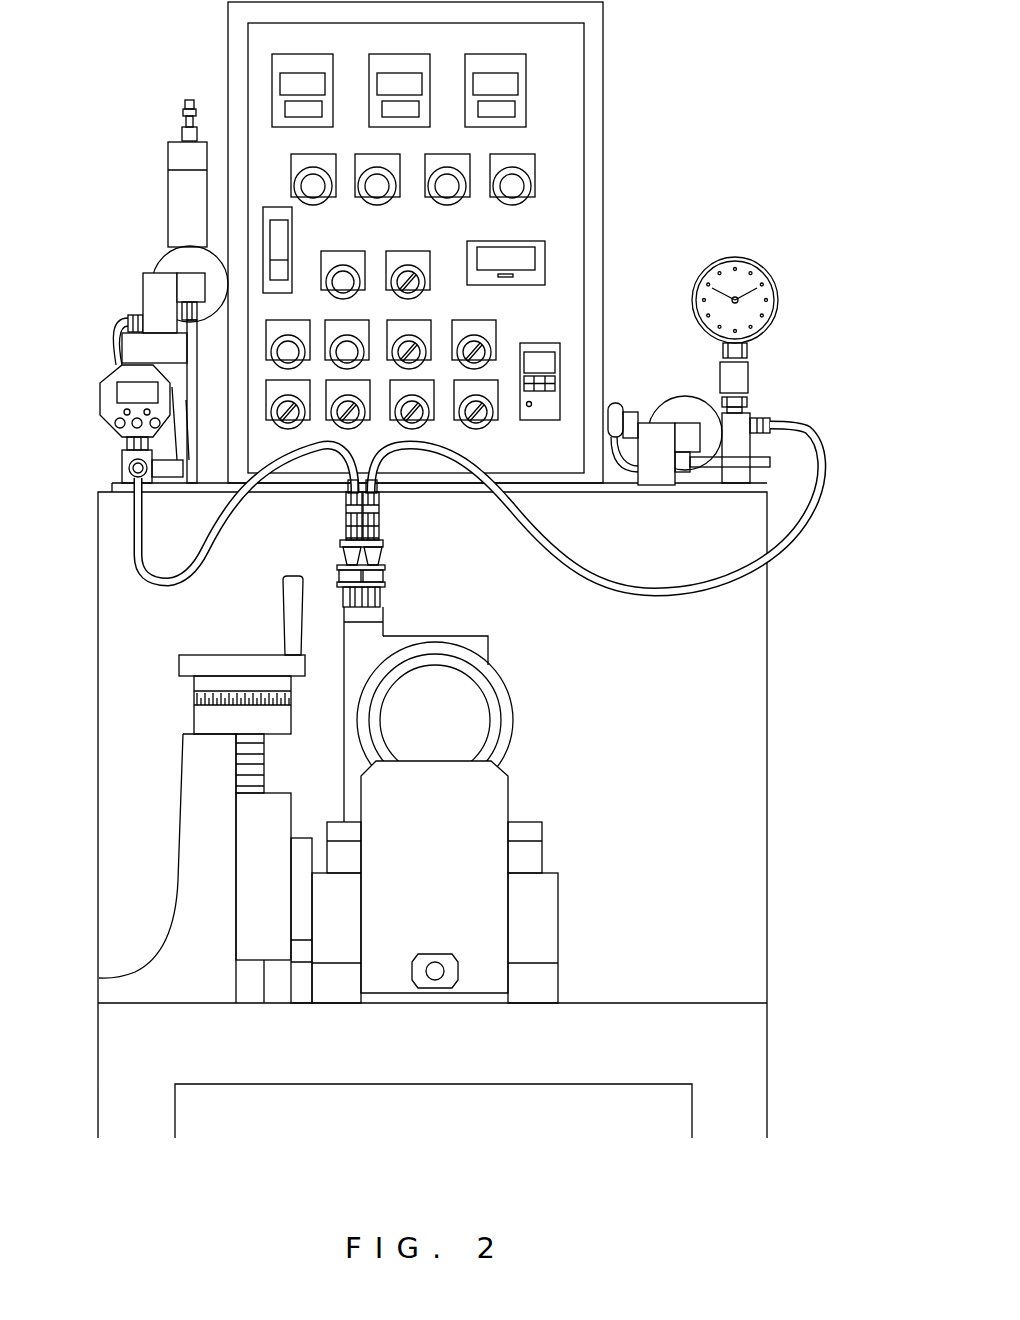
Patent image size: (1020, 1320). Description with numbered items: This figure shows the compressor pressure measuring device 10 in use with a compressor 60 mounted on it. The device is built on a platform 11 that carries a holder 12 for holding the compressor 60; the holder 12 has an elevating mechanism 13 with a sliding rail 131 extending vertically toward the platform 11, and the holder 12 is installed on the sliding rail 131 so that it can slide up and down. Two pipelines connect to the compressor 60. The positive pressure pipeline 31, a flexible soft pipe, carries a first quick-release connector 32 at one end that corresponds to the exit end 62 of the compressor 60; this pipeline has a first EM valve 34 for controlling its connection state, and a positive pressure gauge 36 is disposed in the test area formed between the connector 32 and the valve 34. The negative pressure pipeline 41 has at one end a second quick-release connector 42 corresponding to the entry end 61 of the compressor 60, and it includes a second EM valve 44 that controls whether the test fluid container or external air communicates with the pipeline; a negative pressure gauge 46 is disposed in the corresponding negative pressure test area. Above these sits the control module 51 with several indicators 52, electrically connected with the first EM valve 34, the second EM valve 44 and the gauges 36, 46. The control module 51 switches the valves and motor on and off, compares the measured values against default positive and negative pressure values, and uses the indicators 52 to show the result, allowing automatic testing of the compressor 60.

The compressor pressure measuring device 10 is at (185, 70).
The platform 11 is at (586, 1000).
The holder 12 is at (500, 783).
The elevating mechanism 13 is at (187, 770).
The sliding rail 131 is at (257, 786).
The positive pressure pipeline 31 is at (673, 585).
The first quick-release connector 32 is at (380, 552).
The first EM valve 34 is at (658, 497).
The positive pressure gauge 36 is at (710, 258).
The negative pressure pipeline 41 is at (195, 568).
The second quick-release connector 42 is at (340, 550).
The second EM valve 44 is at (150, 290).
The negative pressure gauge 46 is at (108, 398).
The control module 51 is at (582, 178).
The indicators 52 is at (324, 202).
The compressor 60 is at (497, 680).
The entry end 61 is at (343, 598).
The exit end 62 is at (383, 593).